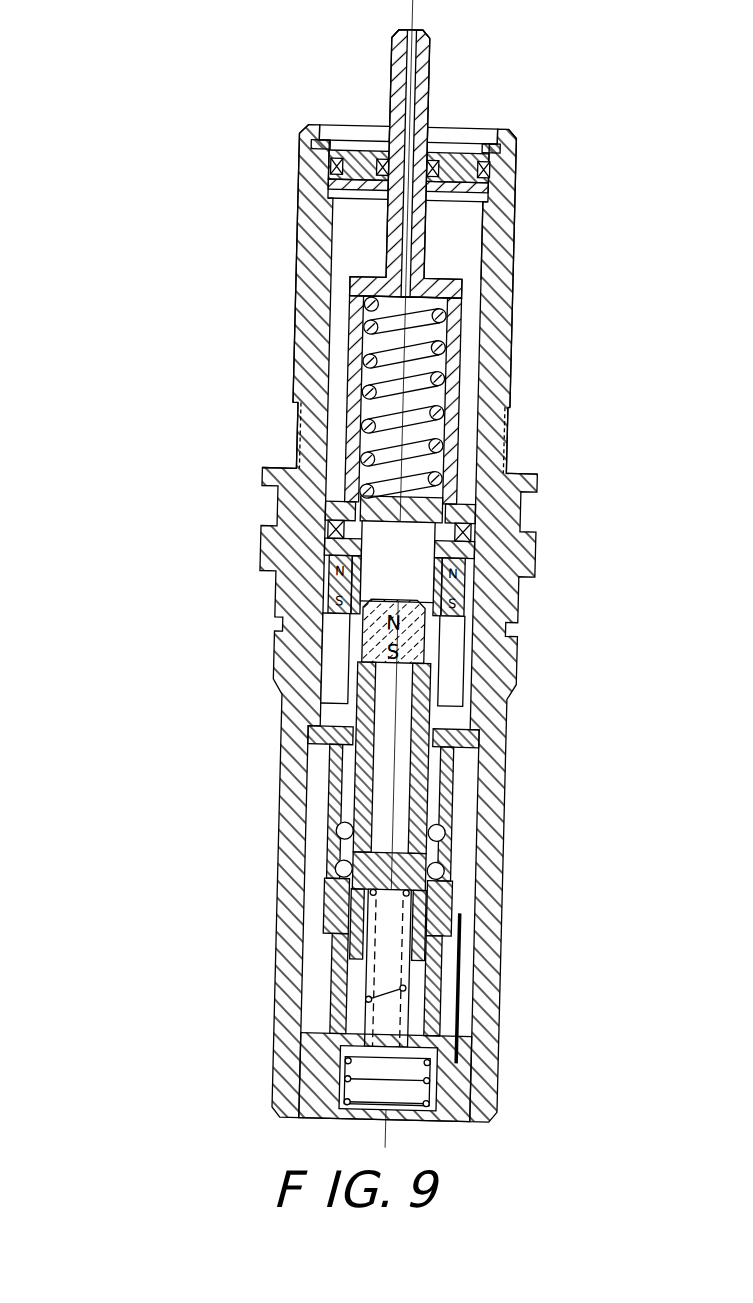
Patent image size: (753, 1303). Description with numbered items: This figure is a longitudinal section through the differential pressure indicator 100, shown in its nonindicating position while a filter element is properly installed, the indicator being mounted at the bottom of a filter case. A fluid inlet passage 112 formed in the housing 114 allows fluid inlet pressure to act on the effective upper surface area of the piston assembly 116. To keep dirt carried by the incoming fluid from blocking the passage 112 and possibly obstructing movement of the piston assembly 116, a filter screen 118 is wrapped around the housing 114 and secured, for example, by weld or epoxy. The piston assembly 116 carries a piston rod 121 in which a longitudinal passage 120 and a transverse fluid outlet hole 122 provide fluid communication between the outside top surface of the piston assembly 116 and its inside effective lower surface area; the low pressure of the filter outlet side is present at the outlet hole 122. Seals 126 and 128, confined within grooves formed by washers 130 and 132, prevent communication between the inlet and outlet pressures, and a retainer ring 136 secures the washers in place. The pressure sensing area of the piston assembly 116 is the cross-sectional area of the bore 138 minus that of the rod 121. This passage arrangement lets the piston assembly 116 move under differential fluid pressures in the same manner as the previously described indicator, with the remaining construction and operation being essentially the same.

The indicator 100 is at (180, 872).
The fluid inlet passage 112 is at (290, 435).
The housing 114 is at (296, 290).
The piston assembly 116 is at (345, 330).
The filter screen 118 is at (297, 450).
The longitudinal passage 120 is at (414, 27).
The piston rod 121 is at (431, 78).
The transverse fluid outlet hole 122 is at (406, 60).
The seal 126 is at (490, 165).
The seal 128 is at (493, 180).
The washer 130 is at (330, 172).
The washer 132 is at (298, 203).
The retainer ring 136 is at (322, 144).
The bore 138 is at (478, 248).